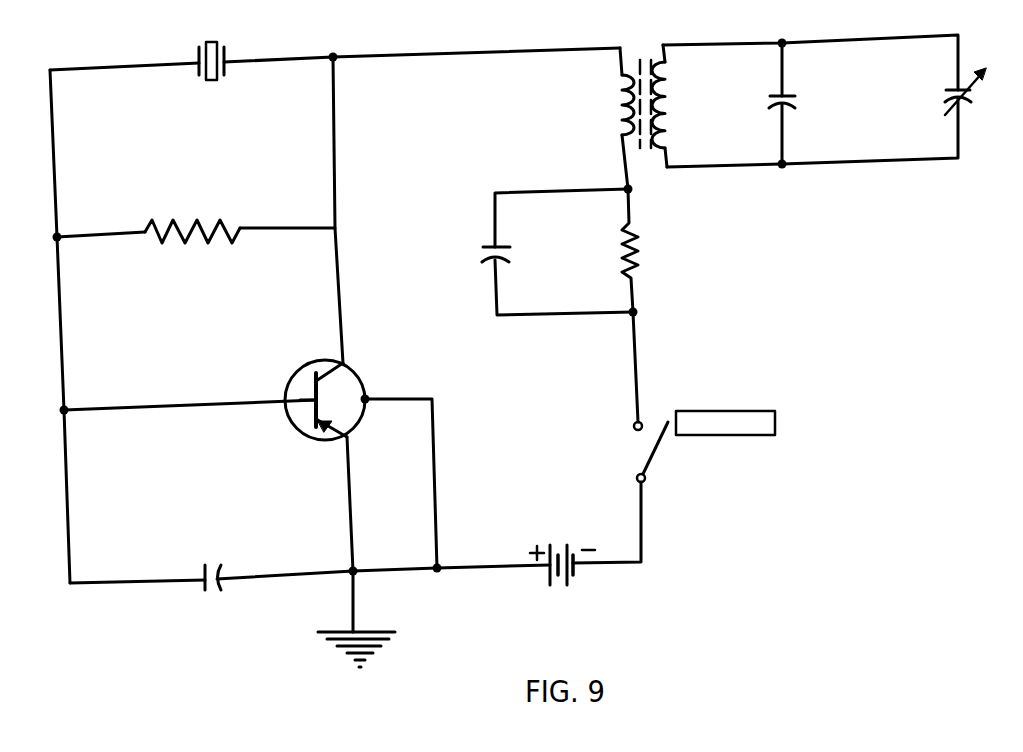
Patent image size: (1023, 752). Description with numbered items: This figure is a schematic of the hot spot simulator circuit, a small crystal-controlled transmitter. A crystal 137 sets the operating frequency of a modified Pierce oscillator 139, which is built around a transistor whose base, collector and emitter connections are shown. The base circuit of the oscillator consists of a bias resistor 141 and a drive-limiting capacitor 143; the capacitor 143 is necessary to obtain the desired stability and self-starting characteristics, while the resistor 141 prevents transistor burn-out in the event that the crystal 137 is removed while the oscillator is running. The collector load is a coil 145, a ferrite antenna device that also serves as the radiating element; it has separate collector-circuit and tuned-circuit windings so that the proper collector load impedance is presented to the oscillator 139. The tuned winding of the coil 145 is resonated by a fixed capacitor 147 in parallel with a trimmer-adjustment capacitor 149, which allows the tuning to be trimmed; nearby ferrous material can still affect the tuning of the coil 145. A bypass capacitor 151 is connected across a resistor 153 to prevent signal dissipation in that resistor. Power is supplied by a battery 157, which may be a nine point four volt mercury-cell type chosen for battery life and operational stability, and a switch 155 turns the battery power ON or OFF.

The crystal 137 is at (212, 80).
The modified Pierce oscillator 139 is at (301, 366).
The bias resistor 141 is at (196, 243).
The drive-limiting capacitor 143 is at (217, 582).
The coil 145 is at (646, 150).
The fixed capacitor 147 is at (793, 96).
The trimmer-adjustment capacitor 149 is at (966, 98).
The bypass capacitor 151 is at (506, 257).
The resistor 153 is at (639, 247).
The switch 155 is at (656, 450).
The battery 157 is at (553, 580).